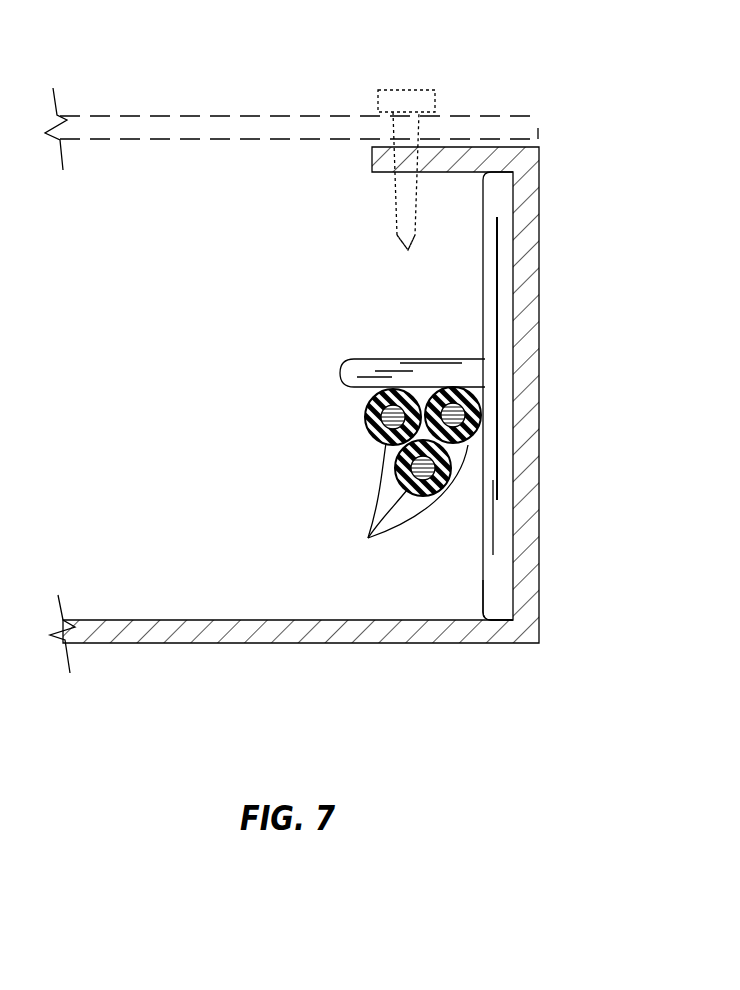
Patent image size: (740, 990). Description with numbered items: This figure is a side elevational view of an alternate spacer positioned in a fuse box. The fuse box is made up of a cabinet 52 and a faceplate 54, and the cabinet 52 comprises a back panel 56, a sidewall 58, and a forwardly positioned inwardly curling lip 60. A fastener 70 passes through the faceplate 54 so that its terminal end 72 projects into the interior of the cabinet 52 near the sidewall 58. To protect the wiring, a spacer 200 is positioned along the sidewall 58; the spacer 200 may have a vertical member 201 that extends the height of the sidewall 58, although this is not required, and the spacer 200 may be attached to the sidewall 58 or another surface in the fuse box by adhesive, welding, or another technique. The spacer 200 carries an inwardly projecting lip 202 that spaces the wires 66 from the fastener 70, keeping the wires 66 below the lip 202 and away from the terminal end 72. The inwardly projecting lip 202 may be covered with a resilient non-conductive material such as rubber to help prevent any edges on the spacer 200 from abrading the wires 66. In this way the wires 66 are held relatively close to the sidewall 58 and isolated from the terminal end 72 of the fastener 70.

The cabinet 52 is at (552, 563).
The faceplate 54 is at (156, 118).
The back panel 56 is at (130, 606).
The sidewall 58 is at (540, 455).
The inwardly curling lip 60 is at (492, 147).
The wires 66 is at (370, 538).
The fastener 70 is at (418, 90).
The terminal end 72 is at (407, 248).
The spacer 200 is at (470, 294).
The vertical member 201 is at (503, 562).
The inwardly projecting lip 202 is at (362, 368).